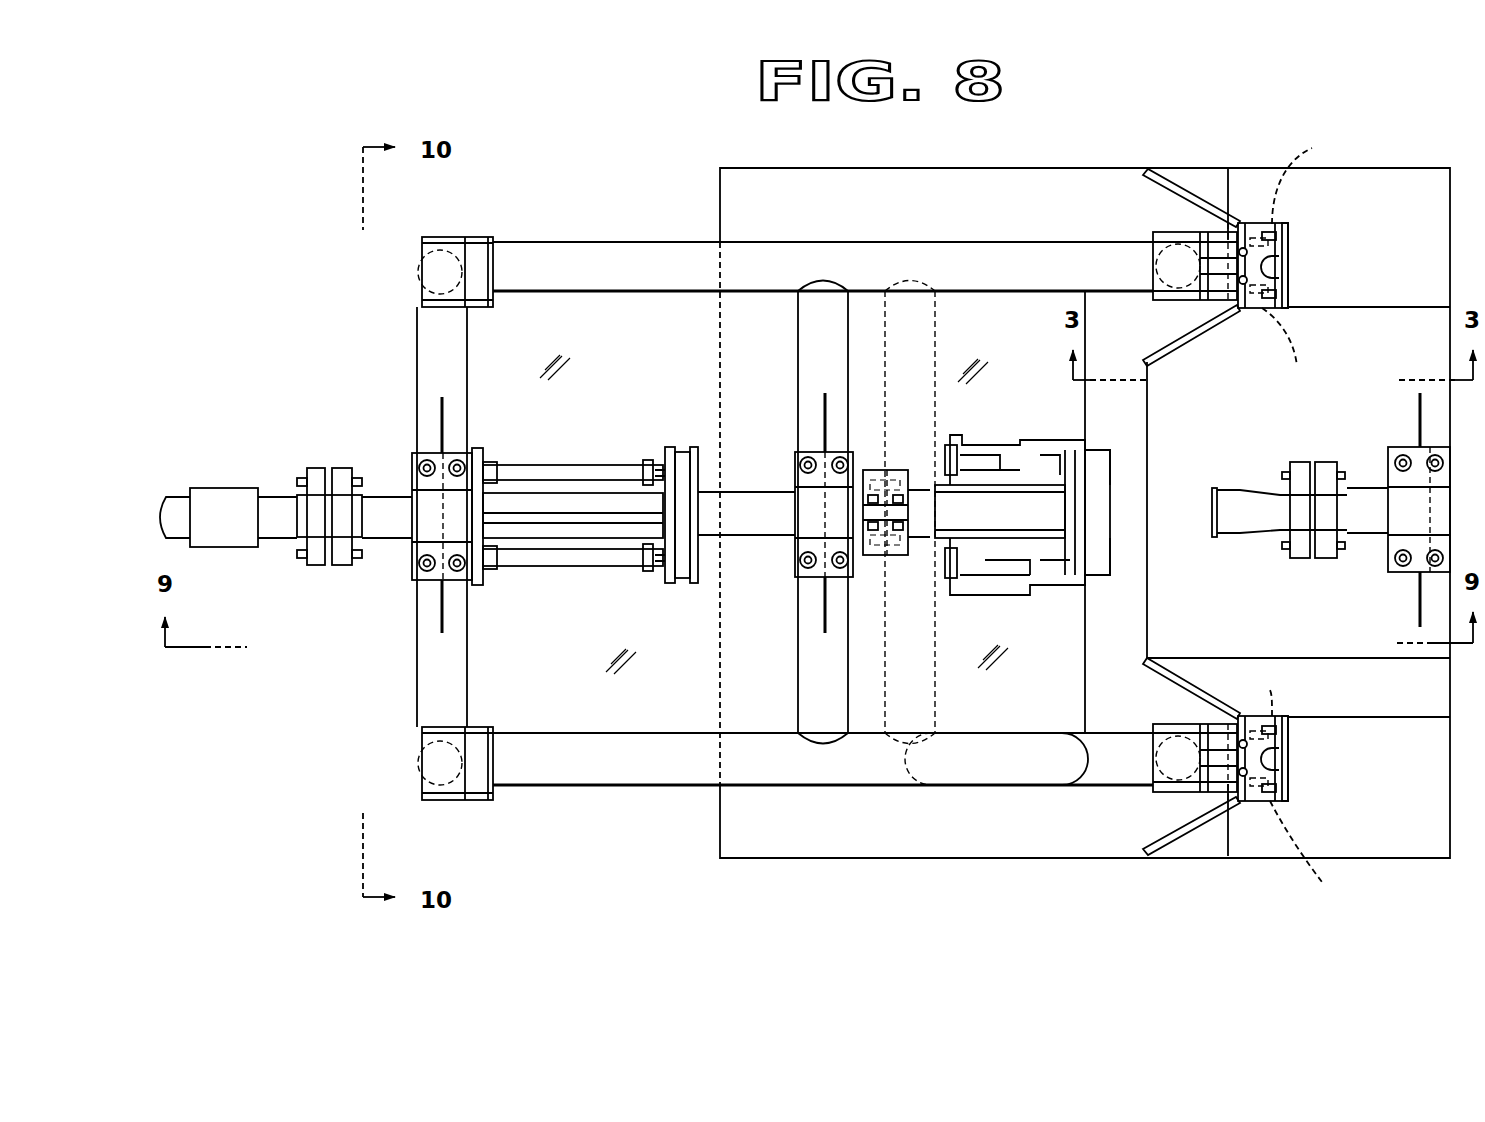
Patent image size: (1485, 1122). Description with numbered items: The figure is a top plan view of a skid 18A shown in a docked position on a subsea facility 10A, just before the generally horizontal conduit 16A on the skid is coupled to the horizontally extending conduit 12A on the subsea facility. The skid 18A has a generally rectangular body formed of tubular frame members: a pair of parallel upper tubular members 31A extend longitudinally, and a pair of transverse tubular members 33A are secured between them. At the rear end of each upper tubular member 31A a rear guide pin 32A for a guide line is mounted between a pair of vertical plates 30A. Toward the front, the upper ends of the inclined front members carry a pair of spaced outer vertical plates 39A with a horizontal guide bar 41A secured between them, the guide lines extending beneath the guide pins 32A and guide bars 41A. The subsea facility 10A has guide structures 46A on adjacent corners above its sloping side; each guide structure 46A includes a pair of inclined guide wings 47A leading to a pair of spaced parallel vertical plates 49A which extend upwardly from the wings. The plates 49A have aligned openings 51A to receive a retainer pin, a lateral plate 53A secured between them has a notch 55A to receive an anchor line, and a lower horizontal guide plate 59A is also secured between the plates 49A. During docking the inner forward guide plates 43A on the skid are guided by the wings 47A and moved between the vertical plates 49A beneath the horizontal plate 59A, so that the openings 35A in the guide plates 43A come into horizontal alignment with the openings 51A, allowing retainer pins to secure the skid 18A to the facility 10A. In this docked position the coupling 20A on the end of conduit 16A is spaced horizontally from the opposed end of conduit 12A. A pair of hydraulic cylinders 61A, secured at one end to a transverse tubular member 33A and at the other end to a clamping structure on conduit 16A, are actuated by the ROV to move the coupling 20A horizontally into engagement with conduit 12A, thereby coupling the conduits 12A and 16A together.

The subsea facility 10A is at (1400, 127).
The conduit 12A is at (1220, 478).
The conduit 16A is at (712, 510).
The skid 18A is at (640, 233).
The coupling 20A is at (1060, 612).
The vertical plates 30A is at (420, 295).
The upper tubular members 31A is at (683, 285).
The rear guide pin 32A is at (487, 258).
The transverse tubular members 33A is at (457, 677).
The openings 35A is at (1287, 244).
The outer vertical plates 39A is at (1157, 232).
The horizontal guide bar 41A is at (1153, 265).
The inner forward guide plates 43A is at (1240, 225).
The guide structures 46A is at (1190, 185).
The inclined guide wings 47A is at (1163, 177).
The vertical plates 49A is at (1284, 227).
The openings 51A is at (1310, 520).
The lateral plate 53A is at (1287, 287).
The notch 55A is at (1280, 268).
The lower horizontal guide plate 59A is at (1287, 231).
The hydraulic cylinders 61A is at (547, 468).